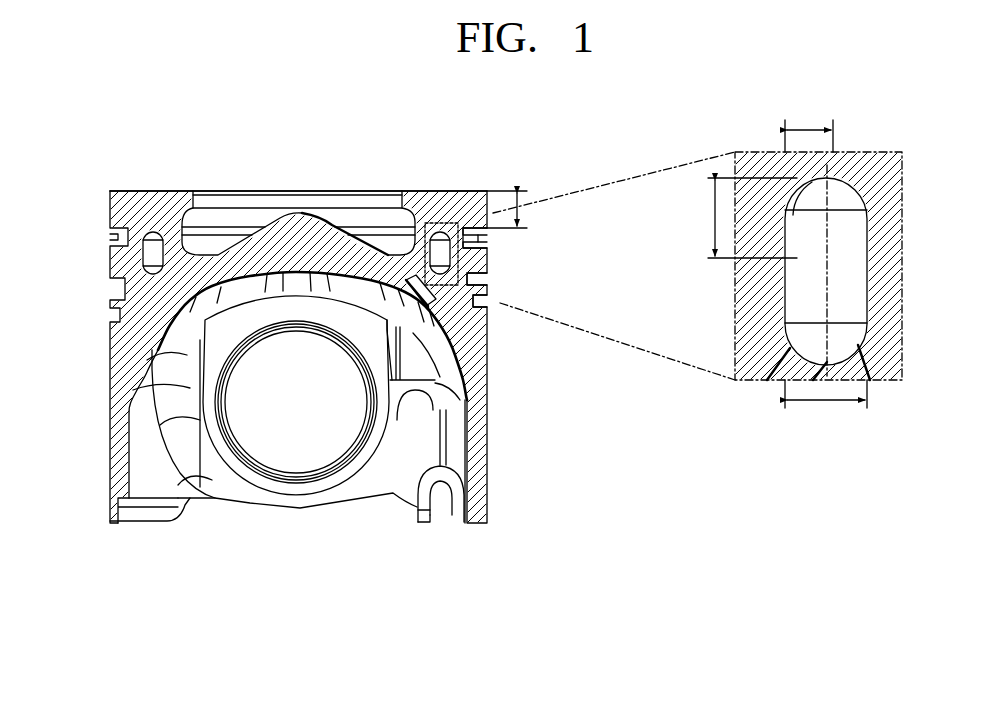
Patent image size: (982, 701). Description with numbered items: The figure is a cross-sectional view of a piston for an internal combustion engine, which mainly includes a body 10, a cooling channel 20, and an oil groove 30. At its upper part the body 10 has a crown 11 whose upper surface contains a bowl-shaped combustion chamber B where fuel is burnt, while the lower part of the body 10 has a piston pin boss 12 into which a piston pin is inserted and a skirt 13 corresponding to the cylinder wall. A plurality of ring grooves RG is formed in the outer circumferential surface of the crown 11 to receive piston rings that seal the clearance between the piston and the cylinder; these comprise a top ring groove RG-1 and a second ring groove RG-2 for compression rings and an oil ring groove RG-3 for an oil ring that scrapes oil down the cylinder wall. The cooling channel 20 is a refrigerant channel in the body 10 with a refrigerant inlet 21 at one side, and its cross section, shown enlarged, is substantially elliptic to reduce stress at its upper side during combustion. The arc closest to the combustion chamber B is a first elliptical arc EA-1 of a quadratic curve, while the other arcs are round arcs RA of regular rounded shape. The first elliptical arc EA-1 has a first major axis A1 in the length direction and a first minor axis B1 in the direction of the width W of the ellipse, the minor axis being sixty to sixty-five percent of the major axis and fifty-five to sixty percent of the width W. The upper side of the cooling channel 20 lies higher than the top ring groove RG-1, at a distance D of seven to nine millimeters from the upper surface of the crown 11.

The body 10 is at (547, 150).
The crown 11 is at (492, 190).
The piston pin boss 12 is at (322, 485).
The skirt 13 is at (480, 462).
The cooling channel 20 is at (488, 256).
The refrigerant inlet 21 is at (422, 303).
The oil groove 30 is at (443, 493).
The combustion chamber B is at (328, 218).
The distance D is at (511, 209).
The ring grooves RG is at (556, 261).
The top ring groove RG-1 is at (488, 239).
The second ring groove RG-2 is at (488, 279).
The oil ring groove RG-3 is at (488, 298).
The first elliptical arc EA-1 is at (798, 204).
The first major axis A1 is at (741, 218).
The first minor axis B1 is at (809, 130).
The width W is at (826, 401).
The round arcs RA is at (865, 190).